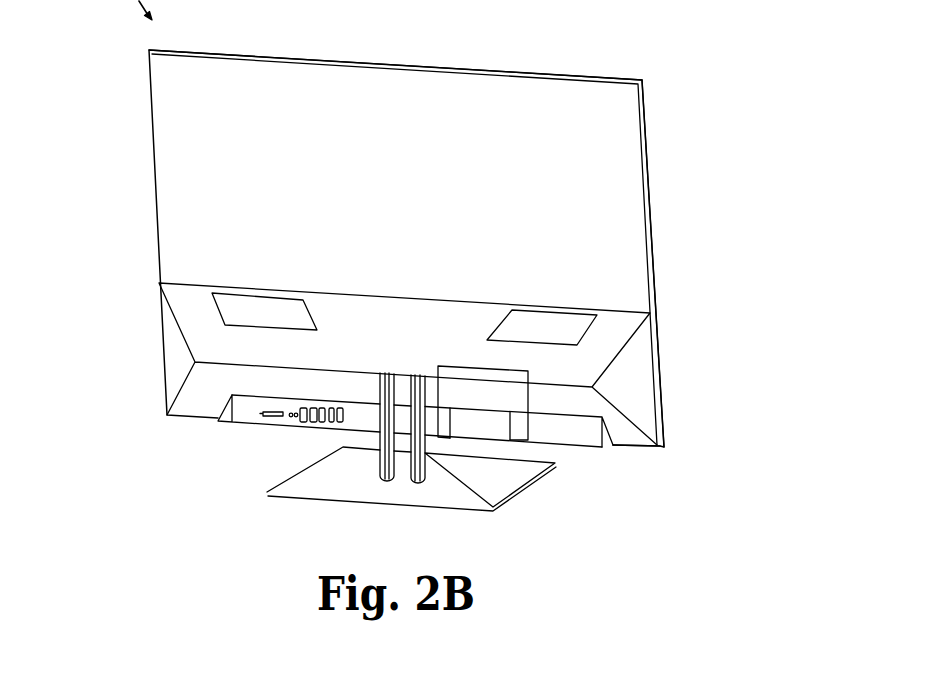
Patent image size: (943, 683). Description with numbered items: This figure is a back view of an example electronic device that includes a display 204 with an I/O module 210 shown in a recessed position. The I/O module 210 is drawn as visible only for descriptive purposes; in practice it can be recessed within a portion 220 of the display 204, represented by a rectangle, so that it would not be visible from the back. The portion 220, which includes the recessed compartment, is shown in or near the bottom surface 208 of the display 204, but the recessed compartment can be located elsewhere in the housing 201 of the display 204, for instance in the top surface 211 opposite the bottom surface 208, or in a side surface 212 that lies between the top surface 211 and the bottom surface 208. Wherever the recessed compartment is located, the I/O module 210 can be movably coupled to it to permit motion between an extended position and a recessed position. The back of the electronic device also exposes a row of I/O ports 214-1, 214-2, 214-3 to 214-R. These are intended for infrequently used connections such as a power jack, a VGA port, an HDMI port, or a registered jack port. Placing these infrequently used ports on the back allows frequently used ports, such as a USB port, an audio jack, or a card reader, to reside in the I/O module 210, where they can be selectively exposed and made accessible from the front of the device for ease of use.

The housing 201 is at (153, 142).
The display 204 is at (403, 198).
The bottom surface 208 is at (620, 446).
The I/O module 210 is at (497, 441).
The top surface 211 is at (553, 77).
The side surface 212 is at (651, 234).
The I/O port 214-1 is at (268, 417).
The I/O port 214-2 is at (313, 423).
The I/O port 214-3 is at (322, 423).
The I/O port 214-R is at (340, 423).
The portion 220 is at (528, 418).